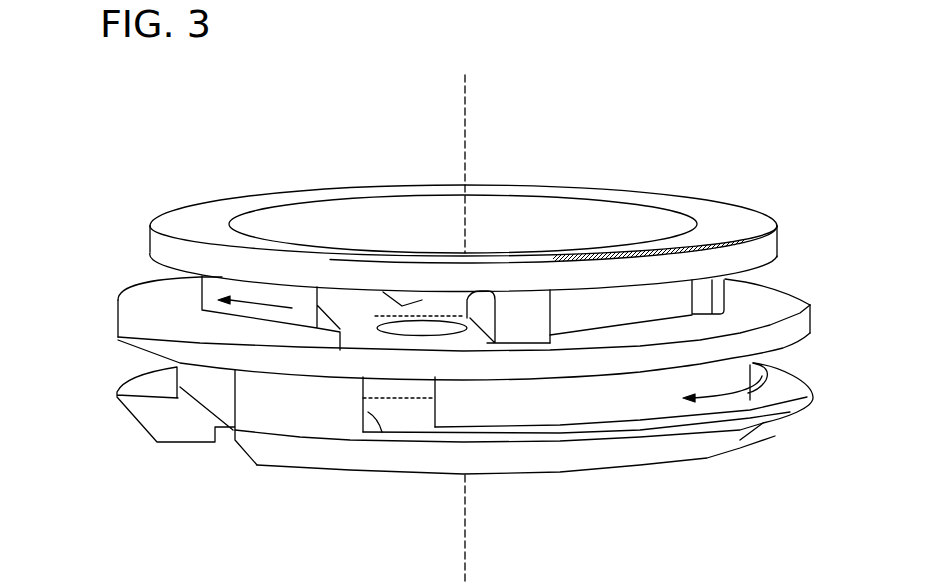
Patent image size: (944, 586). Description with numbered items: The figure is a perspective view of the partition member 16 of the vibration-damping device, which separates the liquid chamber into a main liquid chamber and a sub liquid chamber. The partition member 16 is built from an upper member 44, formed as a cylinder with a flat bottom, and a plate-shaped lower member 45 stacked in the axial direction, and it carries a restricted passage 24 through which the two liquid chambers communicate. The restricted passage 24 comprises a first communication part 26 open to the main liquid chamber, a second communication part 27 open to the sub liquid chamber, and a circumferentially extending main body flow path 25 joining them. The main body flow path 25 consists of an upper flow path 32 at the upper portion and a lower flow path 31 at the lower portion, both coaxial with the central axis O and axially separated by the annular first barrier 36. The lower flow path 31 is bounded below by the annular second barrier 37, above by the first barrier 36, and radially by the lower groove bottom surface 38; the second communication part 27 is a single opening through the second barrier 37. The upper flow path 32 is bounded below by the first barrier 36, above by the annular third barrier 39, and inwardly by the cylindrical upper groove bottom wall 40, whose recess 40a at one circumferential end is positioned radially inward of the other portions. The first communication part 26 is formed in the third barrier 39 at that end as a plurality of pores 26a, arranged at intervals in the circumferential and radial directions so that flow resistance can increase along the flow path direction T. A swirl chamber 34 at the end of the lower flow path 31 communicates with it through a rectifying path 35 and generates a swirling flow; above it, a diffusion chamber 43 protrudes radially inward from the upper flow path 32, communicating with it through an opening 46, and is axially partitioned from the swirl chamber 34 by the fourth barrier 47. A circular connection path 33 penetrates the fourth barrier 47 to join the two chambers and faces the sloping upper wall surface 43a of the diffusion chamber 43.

The partition member 16 is at (820, 187).
The restricted passage 24 is at (778, 292).
The main body flow path 25 is at (63, 277).
The first communication part 26 is at (712, 238).
The pores 26a is at (642, 242).
The second communication part 27 is at (147, 402).
The lower flow path 31 is at (157, 368).
The upper flow path 32 is at (178, 298).
The connection path 33 is at (438, 318).
The swirl chamber 34 is at (405, 395).
The rectifying path 35 is at (382, 432).
The first barrier 36 is at (490, 367).
The second barrier 37 is at (117, 392).
The lower groove bottom surface 38 is at (652, 398).
The third barrier 39 is at (190, 205).
The upper groove bottom wall 40 is at (200, 278).
The recess 40a is at (580, 317).
The diffusion chamber 43 is at (468, 298).
The upper wall surface 43a is at (395, 306).
The upper member 44 is at (812, 307).
The lower member 45 is at (815, 388).
The opening 46 is at (343, 332).
The fourth barrier 47 is at (385, 323).
The central axis O is at (466, 97).
The flow path direction T is at (257, 298).